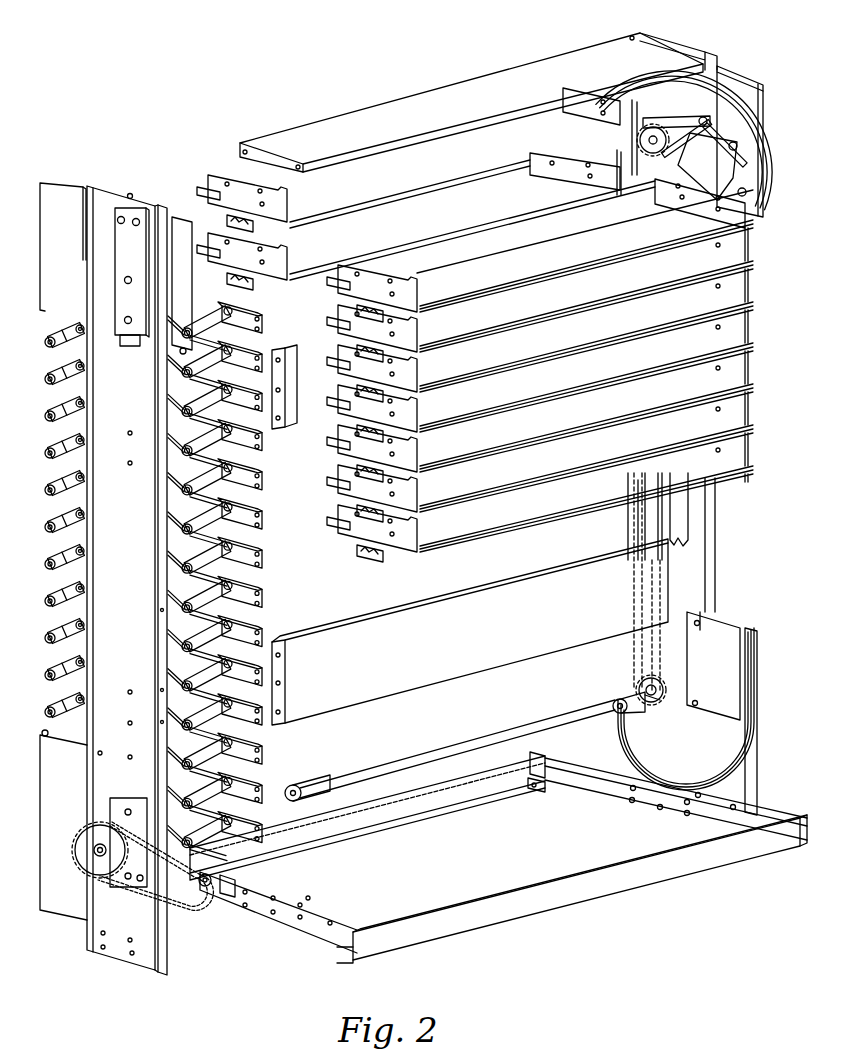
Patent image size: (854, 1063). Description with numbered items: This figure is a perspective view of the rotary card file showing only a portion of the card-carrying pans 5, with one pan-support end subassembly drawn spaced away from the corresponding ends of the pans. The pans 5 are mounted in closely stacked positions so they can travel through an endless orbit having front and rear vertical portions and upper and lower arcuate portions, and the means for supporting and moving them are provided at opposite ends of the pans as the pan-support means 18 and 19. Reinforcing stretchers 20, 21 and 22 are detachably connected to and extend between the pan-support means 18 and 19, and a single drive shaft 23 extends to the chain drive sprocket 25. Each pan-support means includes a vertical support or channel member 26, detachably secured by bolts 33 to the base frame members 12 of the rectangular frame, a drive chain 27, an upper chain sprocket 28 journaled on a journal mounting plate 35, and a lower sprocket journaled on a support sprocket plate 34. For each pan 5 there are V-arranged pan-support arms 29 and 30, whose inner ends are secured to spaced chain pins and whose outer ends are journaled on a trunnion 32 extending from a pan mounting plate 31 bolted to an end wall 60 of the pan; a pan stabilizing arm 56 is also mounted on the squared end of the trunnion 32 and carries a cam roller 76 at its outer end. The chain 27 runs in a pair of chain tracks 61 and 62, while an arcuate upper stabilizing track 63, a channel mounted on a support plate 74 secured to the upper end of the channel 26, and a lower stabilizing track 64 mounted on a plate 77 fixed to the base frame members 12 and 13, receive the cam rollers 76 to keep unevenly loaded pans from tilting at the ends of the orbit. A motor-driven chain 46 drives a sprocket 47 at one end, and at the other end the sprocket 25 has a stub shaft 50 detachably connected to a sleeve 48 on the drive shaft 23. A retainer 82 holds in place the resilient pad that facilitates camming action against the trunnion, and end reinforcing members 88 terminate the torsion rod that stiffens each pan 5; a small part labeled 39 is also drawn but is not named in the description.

The pans 5 is at (217, 172).
The base frame member 12 is at (292, 912).
The base frame member 13 is at (375, 822).
The pan-support means 18 is at (128, 183).
The pan-support means 19 is at (705, 50).
The stretcher 20 is at (390, 110).
The stretcher 21 is at (300, 423).
The stretcher 22 is at (310, 647).
The drive shaft 23 is at (427, 755).
The chain drive sprocket 25 is at (655, 712).
The vertical support member 26 is at (708, 567).
The drive chain 27 is at (632, 535).
The upper chain sprocket 28 is at (637, 120).
The pan-support arm 29 is at (210, 303).
The pan-support arm 30 is at (202, 317).
The pan mounting plate 31 is at (78, 470).
The trunnion 32 is at (233, 313).
The bolts 33 is at (659, 810).
The support sprocket plate 34 is at (138, 812).
The journal mounting plate 35 is at (122, 302).
The stop tab 39 is at (138, 348).
The chain 46 is at (137, 895).
The sprocket 47 is at (87, 840).
The sleeve 48 is at (310, 780).
The stub shaft 50 is at (640, 712).
The pan stabilizing arm 56 is at (53, 375).
The end wall 60 is at (275, 203).
The chain track 61 is at (650, 507).
The chain track 62 is at (685, 500).
The upper stabilizing track 63 is at (707, 113).
The lower stabilizing track 64 is at (685, 785).
The support plate 74 is at (65, 203).
The cam roller 76 is at (45, 537).
The plate 77 is at (75, 902).
The retainer 82 is at (225, 225).
The end reinforcing members 88 is at (202, 185).